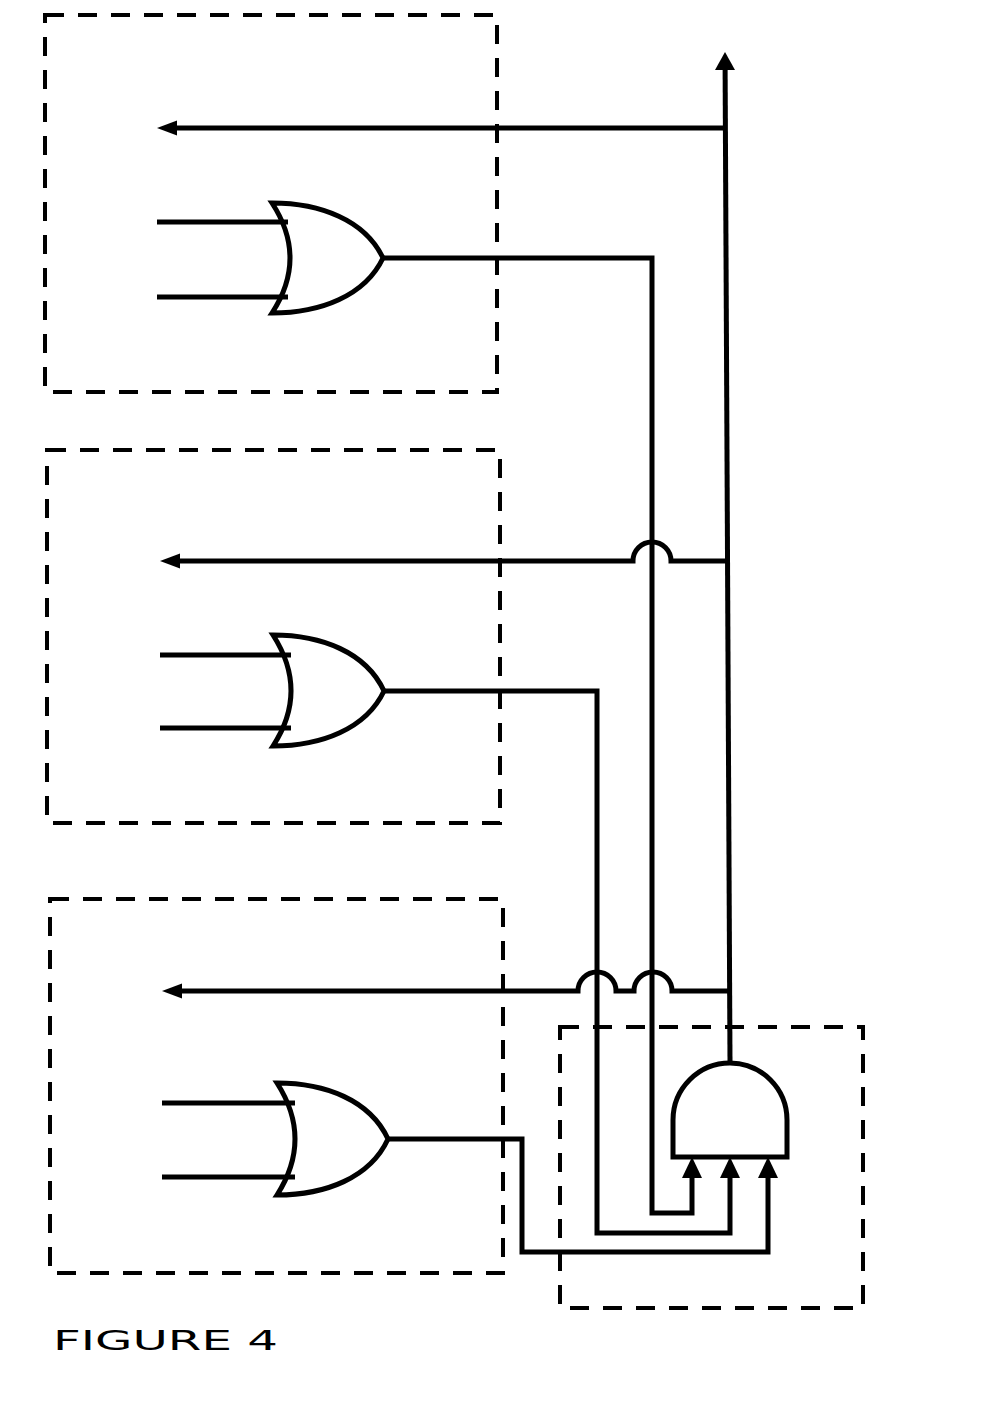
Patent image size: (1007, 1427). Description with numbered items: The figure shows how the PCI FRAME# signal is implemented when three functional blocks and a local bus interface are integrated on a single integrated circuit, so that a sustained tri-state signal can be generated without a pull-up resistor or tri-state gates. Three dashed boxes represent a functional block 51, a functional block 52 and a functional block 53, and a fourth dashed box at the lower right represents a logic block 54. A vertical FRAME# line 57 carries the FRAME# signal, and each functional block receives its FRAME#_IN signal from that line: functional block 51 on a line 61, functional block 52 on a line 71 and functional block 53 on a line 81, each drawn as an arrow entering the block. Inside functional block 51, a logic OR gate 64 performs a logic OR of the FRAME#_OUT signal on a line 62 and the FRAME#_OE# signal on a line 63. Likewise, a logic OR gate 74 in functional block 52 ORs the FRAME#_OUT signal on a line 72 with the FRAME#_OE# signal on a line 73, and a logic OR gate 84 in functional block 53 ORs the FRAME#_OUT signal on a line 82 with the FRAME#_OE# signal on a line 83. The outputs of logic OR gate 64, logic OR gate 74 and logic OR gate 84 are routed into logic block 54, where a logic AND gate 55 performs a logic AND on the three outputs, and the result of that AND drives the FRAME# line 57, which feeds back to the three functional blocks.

The functional block 51 is at (368, 393).
The functional block 52 is at (370, 825).
The functional block 53 is at (372, 1275).
The logic block 54 is at (807, 1311).
The logic AND gate 55 is at (788, 1135).
The FRAME# line 57 is at (727, 348).
The line 61 is at (213, 132).
The line 62 is at (173, 225).
The line 63 is at (173, 300).
The logic OR gate 64 is at (288, 317).
The line 71 is at (215, 565).
The line 72 is at (175, 657).
The line 73 is at (175, 731).
The logic OR gate 74 is at (290, 748).
The line 81 is at (217, 995).
The line 82 is at (178, 1105).
The line 83 is at (178, 1180).
The logic OR gate 84 is at (293, 1200).